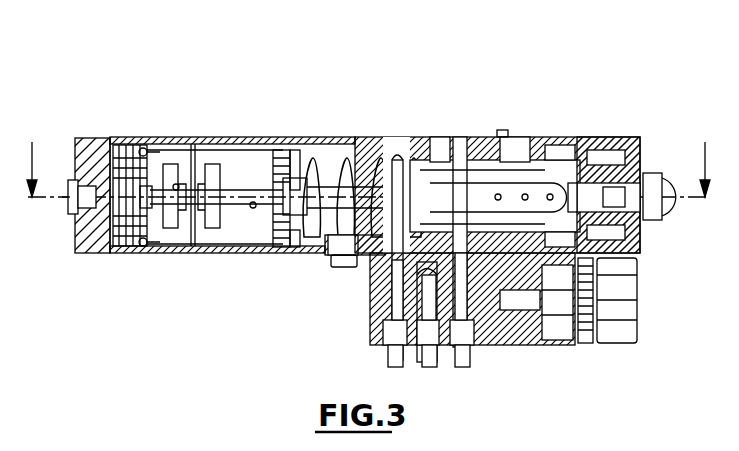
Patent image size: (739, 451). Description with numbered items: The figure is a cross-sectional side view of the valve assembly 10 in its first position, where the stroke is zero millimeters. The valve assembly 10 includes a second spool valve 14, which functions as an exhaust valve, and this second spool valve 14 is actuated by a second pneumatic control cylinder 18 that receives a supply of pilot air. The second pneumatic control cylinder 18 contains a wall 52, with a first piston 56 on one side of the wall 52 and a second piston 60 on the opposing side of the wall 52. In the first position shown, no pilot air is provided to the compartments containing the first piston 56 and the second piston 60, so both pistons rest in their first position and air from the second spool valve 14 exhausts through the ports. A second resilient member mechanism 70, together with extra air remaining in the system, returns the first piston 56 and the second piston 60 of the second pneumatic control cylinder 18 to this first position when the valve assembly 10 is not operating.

The valve assembly 10 is at (147, 63).
The second spool valve 14 is at (443, 155).
The second pneumatic control cylinder 18 is at (227, 138).
The wall 52 is at (193, 150).
The first piston 56 is at (175, 222).
The second piston 60 is at (213, 224).
The second resilient member mechanism 70 is at (348, 160).